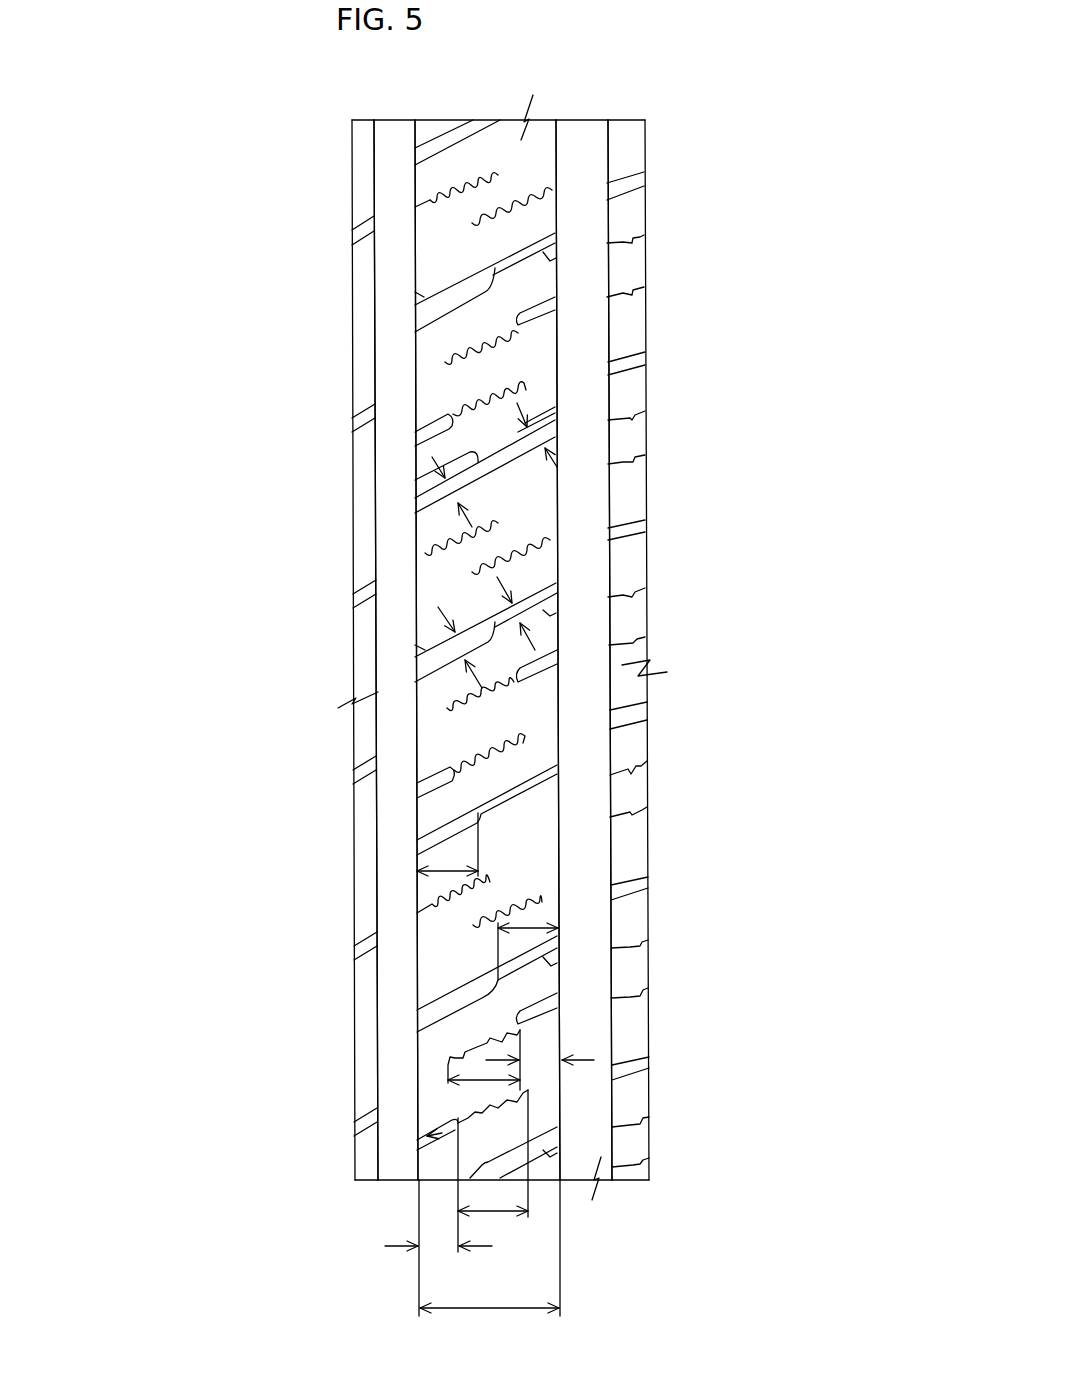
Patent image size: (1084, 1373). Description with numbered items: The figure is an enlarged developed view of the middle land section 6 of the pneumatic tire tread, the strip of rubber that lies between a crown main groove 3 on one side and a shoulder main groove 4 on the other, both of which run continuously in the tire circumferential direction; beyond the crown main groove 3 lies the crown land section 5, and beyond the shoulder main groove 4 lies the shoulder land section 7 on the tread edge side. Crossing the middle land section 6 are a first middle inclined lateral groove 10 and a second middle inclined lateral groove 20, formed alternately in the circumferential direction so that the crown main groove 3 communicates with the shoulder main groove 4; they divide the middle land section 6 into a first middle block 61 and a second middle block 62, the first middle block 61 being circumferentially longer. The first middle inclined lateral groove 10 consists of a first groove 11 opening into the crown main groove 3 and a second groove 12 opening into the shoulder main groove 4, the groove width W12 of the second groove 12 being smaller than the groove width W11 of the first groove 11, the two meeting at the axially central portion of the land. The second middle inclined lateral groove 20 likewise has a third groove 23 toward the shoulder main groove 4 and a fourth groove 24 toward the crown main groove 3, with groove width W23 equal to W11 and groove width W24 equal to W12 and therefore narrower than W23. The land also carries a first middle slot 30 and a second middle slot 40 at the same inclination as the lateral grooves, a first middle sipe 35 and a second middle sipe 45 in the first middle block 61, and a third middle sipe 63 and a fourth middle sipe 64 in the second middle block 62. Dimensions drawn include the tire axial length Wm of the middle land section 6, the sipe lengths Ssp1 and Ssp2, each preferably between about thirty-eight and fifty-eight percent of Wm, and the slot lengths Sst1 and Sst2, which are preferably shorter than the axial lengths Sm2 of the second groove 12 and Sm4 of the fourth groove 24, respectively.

The crown main groove 3 is at (395, 327).
The shoulder main groove 4 is at (584, 255).
The crown land section 5 is at (360, 990).
The middle land section 6 is at (476, 160).
The shoulder land section 7 is at (634, 1032).
The first middle inclined lateral groove 10 is at (466, 286).
The first groove 11 is at (416, 660).
The second groove 12 is at (528, 638).
The second middle inclined lateral groove 20 is at (490, 460).
The third groove 23 is at (507, 458).
The fourth groove 24 is at (414, 506).
The first middle slot 30 is at (548, 1048).
The first middle sipe 35 is at (465, 1052).
The second middle slot 40 is at (430, 1145).
The second middle sipe 45 is at (460, 1117).
The first middle block 61 is at (472, 728).
The second middle block 62 is at (530, 517).
The third middle sipe 63 is at (445, 540).
The fourth middle sipe 64 is at (510, 572).
The groove width of first groove W11 is at (465, 647).
The groove width of second groove W12 is at (540, 618).
The groove width of third groove W23 is at (540, 412).
The groove width of fourth groove W24 is at (437, 492).
The tire axial length of fourth groove Sm4 is at (448, 871).
The tire axial length of second groove Sm2 is at (527, 923).
The tire axial length of first middle sipe Ssp1 is at (487, 1063).
The tire axial length of second middle sipe Ssp2 is at (508, 1171).
The tire axial length of first middle slot Sst1 is at (540, 1062).
The tire axial length of second middle slot Sst2 is at (438, 1248).
The tire axial length of middle land section Wm is at (490, 1261).